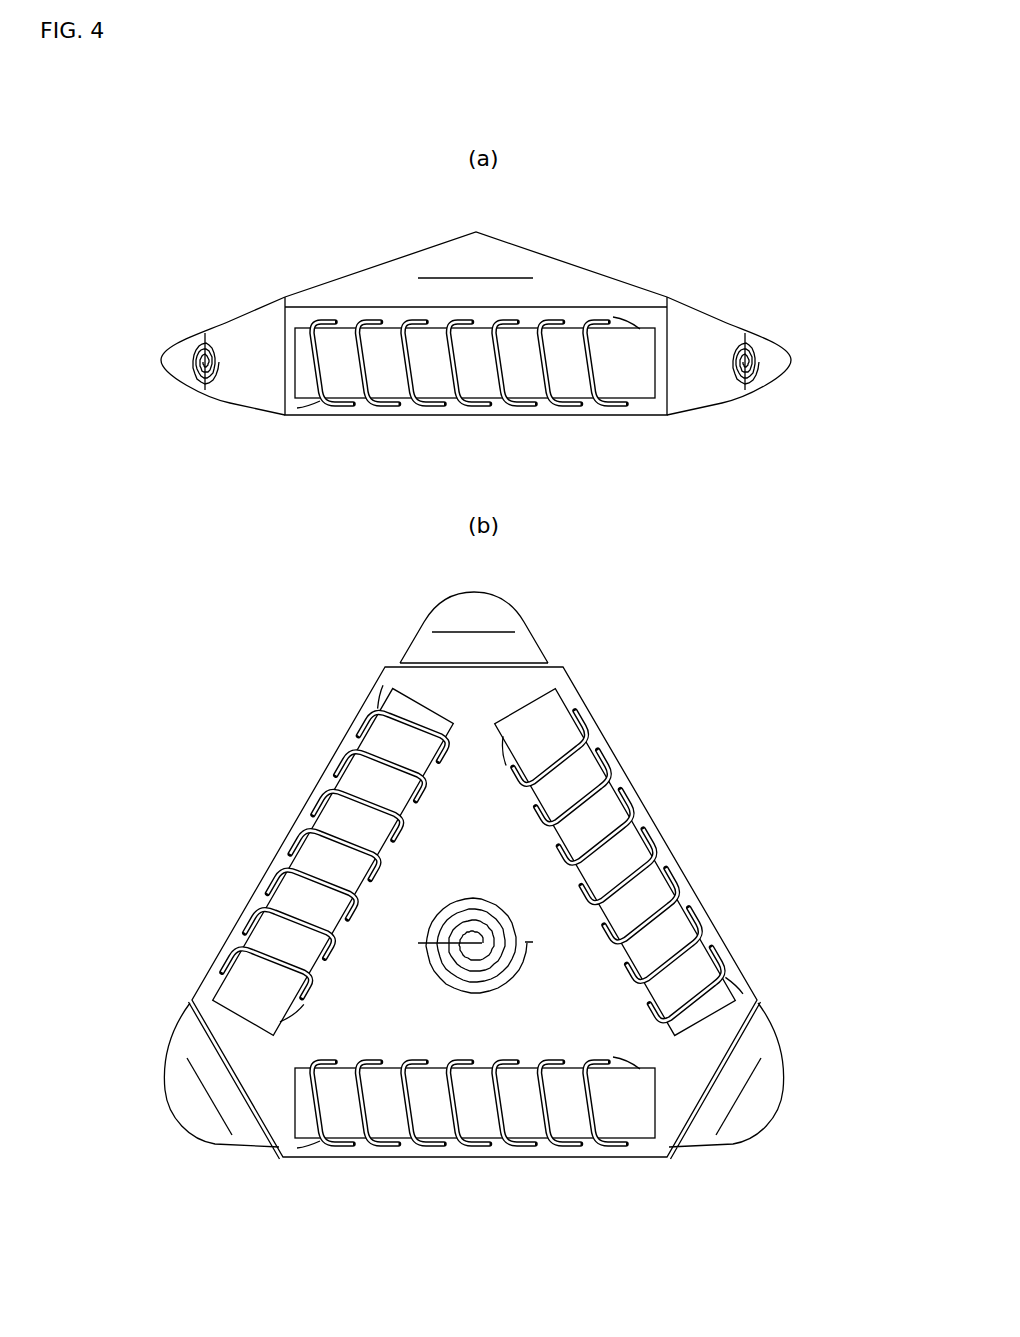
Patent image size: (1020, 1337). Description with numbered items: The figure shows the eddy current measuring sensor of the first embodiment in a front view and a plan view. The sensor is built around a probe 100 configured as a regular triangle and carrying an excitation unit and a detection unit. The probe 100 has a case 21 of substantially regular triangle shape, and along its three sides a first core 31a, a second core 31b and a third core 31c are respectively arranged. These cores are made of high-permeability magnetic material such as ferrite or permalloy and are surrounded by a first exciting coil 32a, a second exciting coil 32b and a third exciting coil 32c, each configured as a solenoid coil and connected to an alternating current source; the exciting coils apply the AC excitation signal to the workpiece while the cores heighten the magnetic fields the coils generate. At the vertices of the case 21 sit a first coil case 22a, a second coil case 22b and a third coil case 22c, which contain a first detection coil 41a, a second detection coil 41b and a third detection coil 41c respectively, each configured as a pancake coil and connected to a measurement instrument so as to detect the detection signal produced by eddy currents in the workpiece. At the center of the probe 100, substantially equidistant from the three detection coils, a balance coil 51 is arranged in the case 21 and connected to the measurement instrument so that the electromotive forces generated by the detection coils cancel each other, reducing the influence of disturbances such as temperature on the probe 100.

The probe 100 is at (663, 245).
The case 21 is at (502, 405).
The first coil case 22a is at (690, 322).
The second coil case 22b is at (230, 327).
The third coil case 22c is at (423, 653).
The first core 31a is at (600, 800).
The second core 31b is at (575, 387).
The third core 31c is at (378, 747).
The first exciting coil 32a is at (633, 823).
The second exciting coil 32b is at (413, 382).
The third exciting coil 32c is at (295, 845).
The first detection coil 41a is at (757, 380).
The second detection coil 41b is at (203, 390).
The third detection coil 41c is at (453, 630).
The balance coil 51 is at (423, 279).